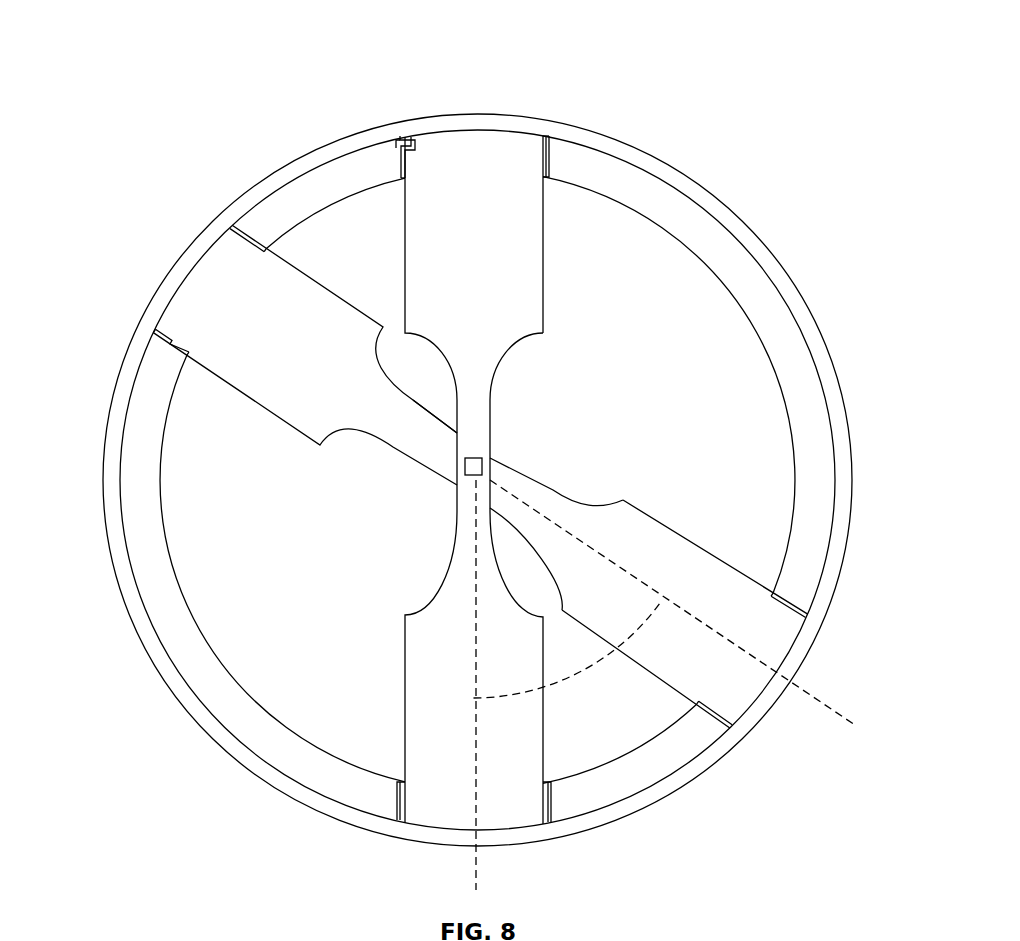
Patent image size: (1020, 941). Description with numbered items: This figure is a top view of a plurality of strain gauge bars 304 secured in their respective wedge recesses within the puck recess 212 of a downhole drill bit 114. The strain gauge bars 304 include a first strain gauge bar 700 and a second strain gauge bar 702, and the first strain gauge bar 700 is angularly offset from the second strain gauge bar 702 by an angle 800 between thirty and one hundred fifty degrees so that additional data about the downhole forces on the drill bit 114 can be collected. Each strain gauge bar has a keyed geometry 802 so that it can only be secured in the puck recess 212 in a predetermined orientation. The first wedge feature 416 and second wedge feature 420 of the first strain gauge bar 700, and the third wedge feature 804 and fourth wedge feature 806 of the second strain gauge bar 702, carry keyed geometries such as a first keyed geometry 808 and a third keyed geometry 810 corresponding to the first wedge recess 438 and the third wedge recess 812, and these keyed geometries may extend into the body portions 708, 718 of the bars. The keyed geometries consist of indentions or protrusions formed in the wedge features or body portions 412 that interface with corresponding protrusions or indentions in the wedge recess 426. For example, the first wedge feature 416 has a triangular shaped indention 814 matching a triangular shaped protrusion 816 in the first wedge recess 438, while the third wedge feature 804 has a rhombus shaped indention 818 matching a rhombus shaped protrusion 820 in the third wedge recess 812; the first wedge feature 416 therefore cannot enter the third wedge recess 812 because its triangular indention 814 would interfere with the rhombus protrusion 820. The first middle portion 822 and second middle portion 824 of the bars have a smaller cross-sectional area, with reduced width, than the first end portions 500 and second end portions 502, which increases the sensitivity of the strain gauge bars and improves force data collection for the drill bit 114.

The downhole drill bit 114 is at (848, 428).
The puck recess 212 is at (112, 430).
The body portion 708 is at (225, 297).
The strain gauge bar 304 is at (523, 215).
The second strain gauge bar 702 is at (525, 255).
The body portion 718 is at (498, 160).
The second middle portion 824 is at (477, 432).
The first end portion 500 is at (307, 310).
The first strain gauge bar 700 is at (272, 392).
The first middle portion 822 is at (423, 445).
The second end portion 502 is at (690, 555).
The angle 800 is at (583, 667).
The second wedge feature 420 is at (782, 628).
The wedge recess 426 is at (551, 163).
The third wedge feature 804 is at (549, 140).
The fourth wedge feature 806 is at (541, 791).
The rhombus shaped indention 818 is at (424, 150).
The third wedge recess 812 is at (408, 138).
The third keyed geometry 810 is at (419, 135).
The rhombus shaped protrusion 820 is at (395, 150).
The first wedge feature 416 is at (256, 234).
The body portion 412 is at (173, 312).
The triangular shaped indention 814 is at (186, 348).
The keyed geometry 802 is at (160, 340).
The first keyed geometry 808 is at (150, 352).
The first wedge recess 438 is at (150, 350).
The triangular shaped protrusion 816 is at (152, 365).